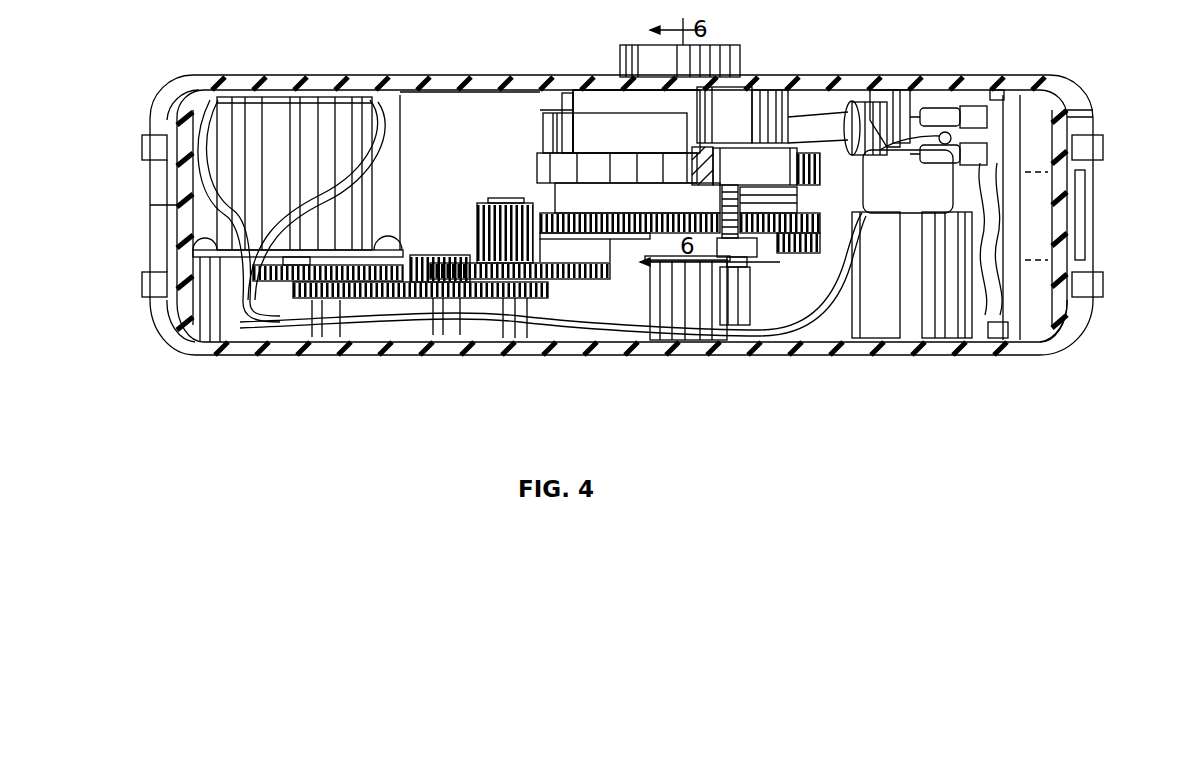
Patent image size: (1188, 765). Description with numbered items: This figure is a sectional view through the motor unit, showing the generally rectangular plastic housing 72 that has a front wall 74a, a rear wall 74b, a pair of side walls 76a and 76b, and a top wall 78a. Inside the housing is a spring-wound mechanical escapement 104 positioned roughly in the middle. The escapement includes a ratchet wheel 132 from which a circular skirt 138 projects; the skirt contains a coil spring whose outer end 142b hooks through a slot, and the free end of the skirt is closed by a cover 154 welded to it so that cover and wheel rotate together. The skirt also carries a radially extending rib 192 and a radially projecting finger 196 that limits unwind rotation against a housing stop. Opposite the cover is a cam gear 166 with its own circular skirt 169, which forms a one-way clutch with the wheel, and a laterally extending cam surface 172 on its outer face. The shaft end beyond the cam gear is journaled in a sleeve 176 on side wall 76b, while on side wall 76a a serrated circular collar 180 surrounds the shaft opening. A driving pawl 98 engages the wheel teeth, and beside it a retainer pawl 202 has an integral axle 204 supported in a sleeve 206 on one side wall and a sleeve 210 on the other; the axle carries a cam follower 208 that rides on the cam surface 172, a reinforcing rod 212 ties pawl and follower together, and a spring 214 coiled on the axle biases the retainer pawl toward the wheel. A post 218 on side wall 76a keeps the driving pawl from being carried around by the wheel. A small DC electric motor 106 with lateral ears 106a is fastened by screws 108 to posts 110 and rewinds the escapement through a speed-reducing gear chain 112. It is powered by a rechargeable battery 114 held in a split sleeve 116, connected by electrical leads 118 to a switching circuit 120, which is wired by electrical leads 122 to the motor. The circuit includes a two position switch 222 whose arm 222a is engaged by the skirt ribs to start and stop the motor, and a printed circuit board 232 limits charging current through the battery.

The housing 72 is at (1027, 352).
The front wall 74a is at (163, 175).
The rear wall 74b is at (1093, 118).
The side wall 76a is at (357, 83).
The side wall 76b is at (243, 347).
The top wall 78a is at (470, 108).
The driving pawl 98 is at (687, 177).
The mechanical escapement 104 is at (510, 113).
The electric motor 106 is at (267, 120).
The ears 106a is at (232, 220).
The screws 108 is at (193, 233).
The posts 110 is at (220, 313).
The speed-reducing gear chain 112 is at (413, 183).
The battery 114 is at (908, 181).
The split sleeve 116 is at (887, 323).
The electrical leads 118 is at (933, 133).
The switching circuit 120 is at (974, 74).
The electrical leads 122 is at (597, 315).
The ratchet wheel 132 is at (537, 167).
The circular skirt 138 is at (630, 133).
The outer end of spring 142b is at (555, 138).
The cover 154 is at (597, 98).
The cam gear 166 is at (627, 218).
The circular skirt 169 is at (552, 192).
The cam surface 172 is at (625, 250).
The sleeve 176 is at (683, 297).
The circular collar 180 is at (620, 53).
The rib 192 is at (540, 117).
The finger 196 is at (558, 120).
The retainer pawl 202 is at (780, 167).
The axle 204 is at (733, 208).
The sleeve 206 is at (730, 117).
The cam follower 208 is at (767, 243).
The sleeve 210 is at (730, 302).
The reinforcing rod 212 is at (783, 255).
The spring 214 is at (777, 200).
The post 218 is at (697, 107).
The switch 222 is at (877, 110).
The switch arm 222a is at (817, 127).
The printed circuit board 232 is at (983, 313).